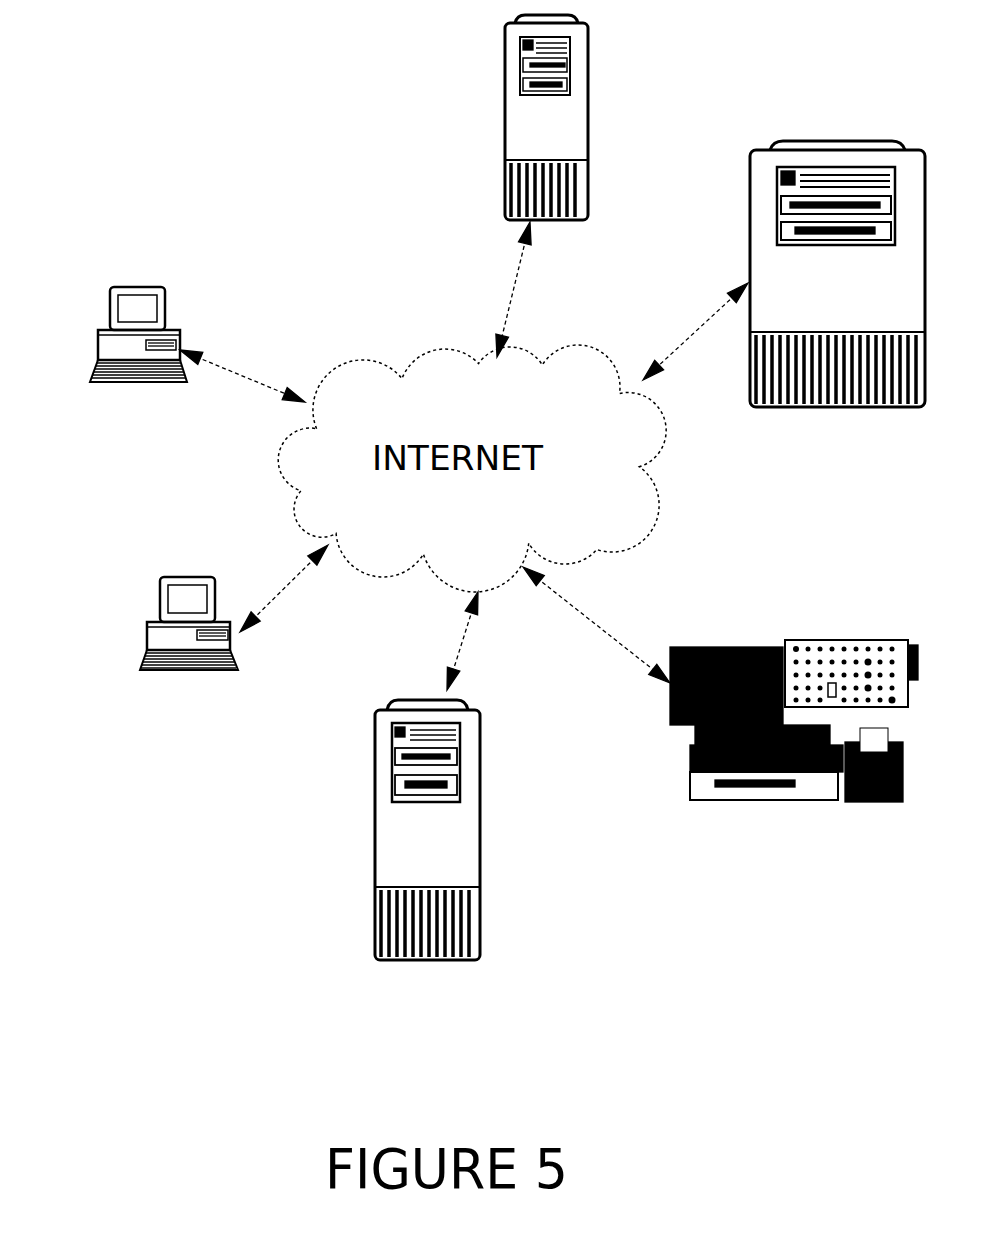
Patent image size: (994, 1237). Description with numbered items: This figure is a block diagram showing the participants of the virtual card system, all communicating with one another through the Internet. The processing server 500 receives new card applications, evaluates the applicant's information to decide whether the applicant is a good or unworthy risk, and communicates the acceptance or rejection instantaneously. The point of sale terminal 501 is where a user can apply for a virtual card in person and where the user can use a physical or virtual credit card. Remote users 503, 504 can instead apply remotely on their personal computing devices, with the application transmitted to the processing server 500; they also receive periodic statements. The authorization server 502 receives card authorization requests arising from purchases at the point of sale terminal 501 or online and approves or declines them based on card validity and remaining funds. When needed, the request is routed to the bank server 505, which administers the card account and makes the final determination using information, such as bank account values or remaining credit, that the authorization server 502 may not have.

The processing server 500 is at (372, 839).
The point of sale terminal 501 is at (686, 789).
The authorization server 502 is at (744, 256).
The remote user 503 is at (91, 346).
The remote user 504 is at (142, 659).
The bank server 505 is at (486, 139).